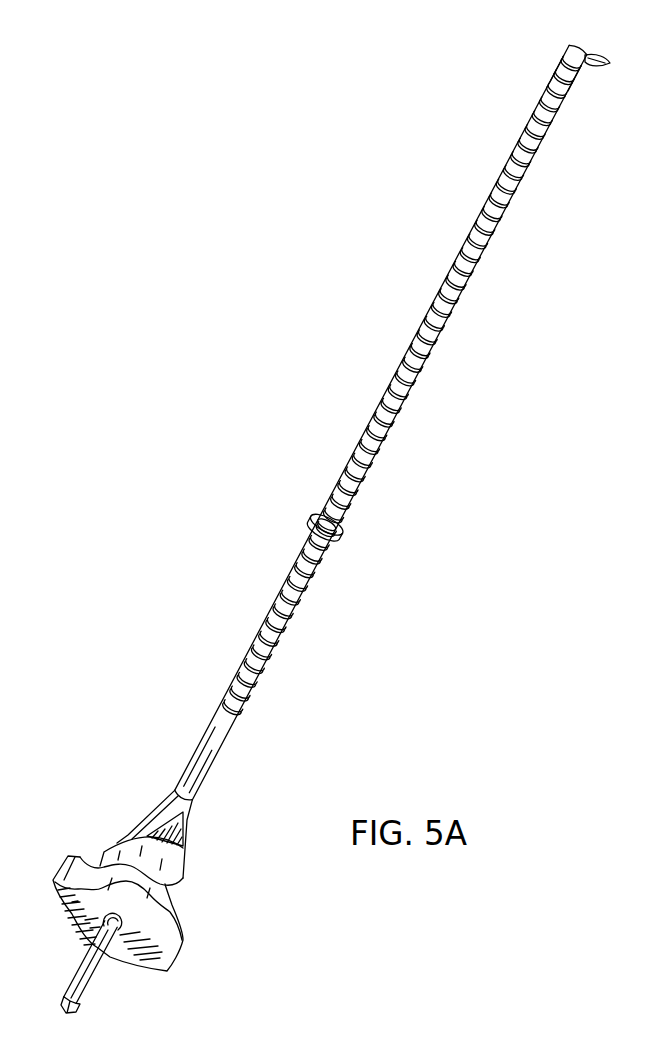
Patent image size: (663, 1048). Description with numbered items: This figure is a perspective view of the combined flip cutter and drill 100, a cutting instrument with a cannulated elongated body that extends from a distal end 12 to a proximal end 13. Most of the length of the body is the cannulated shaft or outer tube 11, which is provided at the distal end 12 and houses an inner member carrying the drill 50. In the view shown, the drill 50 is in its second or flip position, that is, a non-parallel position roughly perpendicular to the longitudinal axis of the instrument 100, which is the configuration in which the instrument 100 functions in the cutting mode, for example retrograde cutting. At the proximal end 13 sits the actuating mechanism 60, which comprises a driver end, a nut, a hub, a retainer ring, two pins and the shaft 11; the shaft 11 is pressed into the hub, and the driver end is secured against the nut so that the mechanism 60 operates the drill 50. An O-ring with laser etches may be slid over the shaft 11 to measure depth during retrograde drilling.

The flip cutter and drill 100 is at (310, 311).
The outer tube 11 is at (400, 403).
The distal end 12 is at (563, 99).
The drill 50 is at (592, 61).
The actuating mechanism 60 is at (167, 885).
The proximal end 13 is at (80, 980).